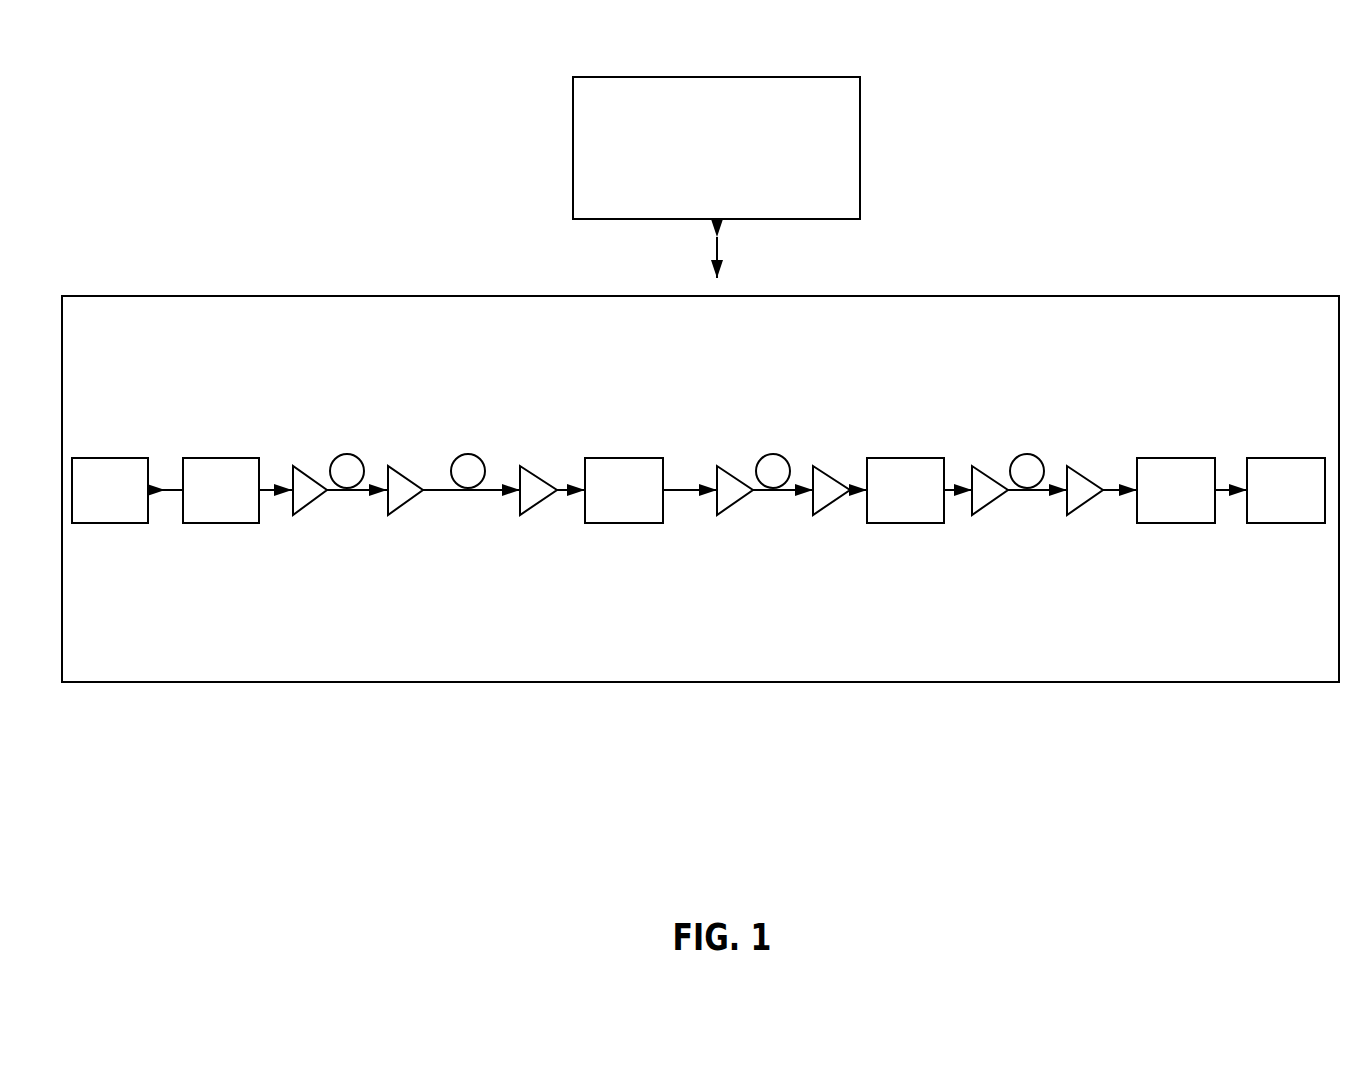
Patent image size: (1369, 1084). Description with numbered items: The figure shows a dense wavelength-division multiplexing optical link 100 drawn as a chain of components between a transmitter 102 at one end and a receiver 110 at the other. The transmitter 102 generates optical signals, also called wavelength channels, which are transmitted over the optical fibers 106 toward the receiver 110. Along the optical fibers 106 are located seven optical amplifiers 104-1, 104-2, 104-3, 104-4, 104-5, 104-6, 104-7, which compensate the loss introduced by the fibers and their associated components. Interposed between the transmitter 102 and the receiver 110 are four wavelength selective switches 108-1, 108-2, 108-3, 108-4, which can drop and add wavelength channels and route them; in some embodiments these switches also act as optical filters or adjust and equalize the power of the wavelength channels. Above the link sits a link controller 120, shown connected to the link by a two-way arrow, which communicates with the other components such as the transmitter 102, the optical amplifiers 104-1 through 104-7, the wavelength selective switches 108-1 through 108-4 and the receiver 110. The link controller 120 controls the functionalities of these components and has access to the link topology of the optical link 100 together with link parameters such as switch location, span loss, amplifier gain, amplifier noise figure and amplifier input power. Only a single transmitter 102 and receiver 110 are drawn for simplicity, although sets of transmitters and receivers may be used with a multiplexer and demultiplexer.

The DWDM optical link 100 is at (135, 77).
The transmitter 102 is at (95, 458).
The optical amplifier 104-1 is at (311, 504).
The optical amplifier 104-2 is at (406, 504).
The optical amplifier 104-3 is at (540, 504).
The optical amplifier 104-4 is at (737, 504).
The optical amplifier 104-5 is at (833, 504).
The optical amplifier 104-6 is at (992, 504).
The optical amplifier 104-7 is at (1087, 504).
The optical fibers 106 is at (338, 454).
The wavelength selective switch 108-1 is at (211, 458).
The wavelength selective switch 108-2 is at (620, 458).
The wavelength selective switch 108-3 is at (891, 458).
The wavelength selective switch 108-4 is at (1170, 458).
The receiver 110 is at (1282, 458).
The link controller 120 is at (742, 185).